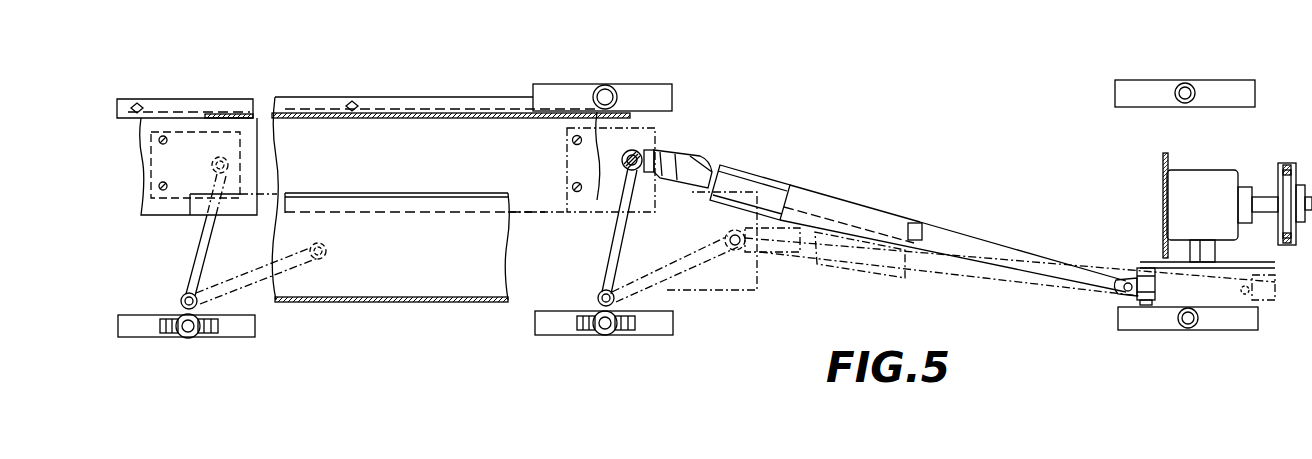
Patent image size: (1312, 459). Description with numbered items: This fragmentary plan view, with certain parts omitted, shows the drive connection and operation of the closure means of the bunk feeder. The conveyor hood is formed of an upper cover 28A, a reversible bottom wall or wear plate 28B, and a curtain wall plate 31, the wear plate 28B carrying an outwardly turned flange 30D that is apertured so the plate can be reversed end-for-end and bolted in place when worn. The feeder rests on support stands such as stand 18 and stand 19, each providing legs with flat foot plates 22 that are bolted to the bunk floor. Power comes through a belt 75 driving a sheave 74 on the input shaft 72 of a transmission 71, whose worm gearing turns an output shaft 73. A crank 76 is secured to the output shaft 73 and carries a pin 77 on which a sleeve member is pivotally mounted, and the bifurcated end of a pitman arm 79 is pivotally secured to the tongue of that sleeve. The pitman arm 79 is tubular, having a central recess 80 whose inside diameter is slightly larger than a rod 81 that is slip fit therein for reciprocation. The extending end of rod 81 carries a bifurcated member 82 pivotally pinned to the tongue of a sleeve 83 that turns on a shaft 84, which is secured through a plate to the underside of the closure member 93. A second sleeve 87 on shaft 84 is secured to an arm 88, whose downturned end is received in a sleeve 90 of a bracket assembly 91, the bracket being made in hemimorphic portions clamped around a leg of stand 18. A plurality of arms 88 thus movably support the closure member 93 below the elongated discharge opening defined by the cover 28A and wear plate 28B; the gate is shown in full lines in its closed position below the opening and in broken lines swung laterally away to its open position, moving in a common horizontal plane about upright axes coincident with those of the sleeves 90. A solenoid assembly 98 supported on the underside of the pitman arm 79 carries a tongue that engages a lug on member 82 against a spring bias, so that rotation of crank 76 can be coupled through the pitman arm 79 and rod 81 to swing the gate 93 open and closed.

The support stand 18 is at (1192, 85).
The support stand 19 is at (183, 338).
The foot plate 22 is at (133, 322).
The upper cover 28A is at (432, 112).
The wear plate 28B is at (287, 305).
The outwardly turned flange 30D is at (366, 193).
The curtain wall plate 31 is at (128, 120).
The transmission 71 is at (1218, 180).
The input shaft 72 is at (1265, 198).
The output shaft 73 is at (1215, 258).
The sheave 74 is at (1280, 170).
The belt 75 is at (1287, 162).
The crank 76 is at (1160, 248).
The pin 77 is at (1146, 305).
The pitman arm 79 is at (975, 240).
The central recess 80 is at (922, 225).
The rod 81 is at (860, 210).
The bifurcated member 82 is at (690, 152).
The sleeve 83 is at (645, 152).
The shaft 84 is at (622, 160).
The second sleeve 87 is at (212, 165).
The arm 88 is at (200, 262).
The sleeve 90 is at (181, 301).
The bracket assembly 91 is at (196, 338).
The closure member 93 is at (155, 208).
The solenoid assembly 98 is at (773, 163).